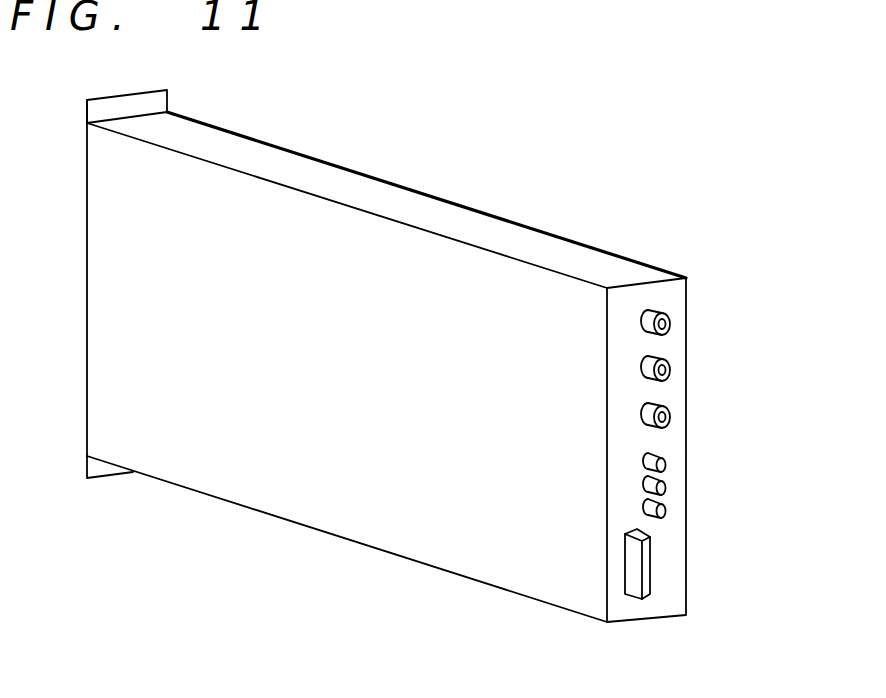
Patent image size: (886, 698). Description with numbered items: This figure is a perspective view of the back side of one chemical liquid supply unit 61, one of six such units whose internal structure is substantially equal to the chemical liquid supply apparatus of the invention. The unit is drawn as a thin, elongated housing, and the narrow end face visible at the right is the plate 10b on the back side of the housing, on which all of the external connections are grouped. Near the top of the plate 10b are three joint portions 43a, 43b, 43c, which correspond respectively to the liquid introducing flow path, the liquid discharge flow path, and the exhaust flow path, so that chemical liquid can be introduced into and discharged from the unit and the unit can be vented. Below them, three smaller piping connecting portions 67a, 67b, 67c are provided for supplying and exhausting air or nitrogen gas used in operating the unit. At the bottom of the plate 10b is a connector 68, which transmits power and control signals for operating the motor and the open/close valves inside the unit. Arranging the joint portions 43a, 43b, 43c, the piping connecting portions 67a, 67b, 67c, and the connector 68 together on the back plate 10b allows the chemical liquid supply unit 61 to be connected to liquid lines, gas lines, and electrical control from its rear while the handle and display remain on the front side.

The plate 10b is at (668, 296).
The chemical liquid supply unit 61 is at (455, 208).
The joint portion 43a is at (670, 364).
The joint portion 43b is at (670, 318).
The joint portion 43c is at (670, 412).
The piping connecting portion 67a is at (665, 458).
The piping connecting portion 67b is at (666, 484).
The piping connecting portion 67c is at (666, 510).
The connector 68 is at (645, 574).